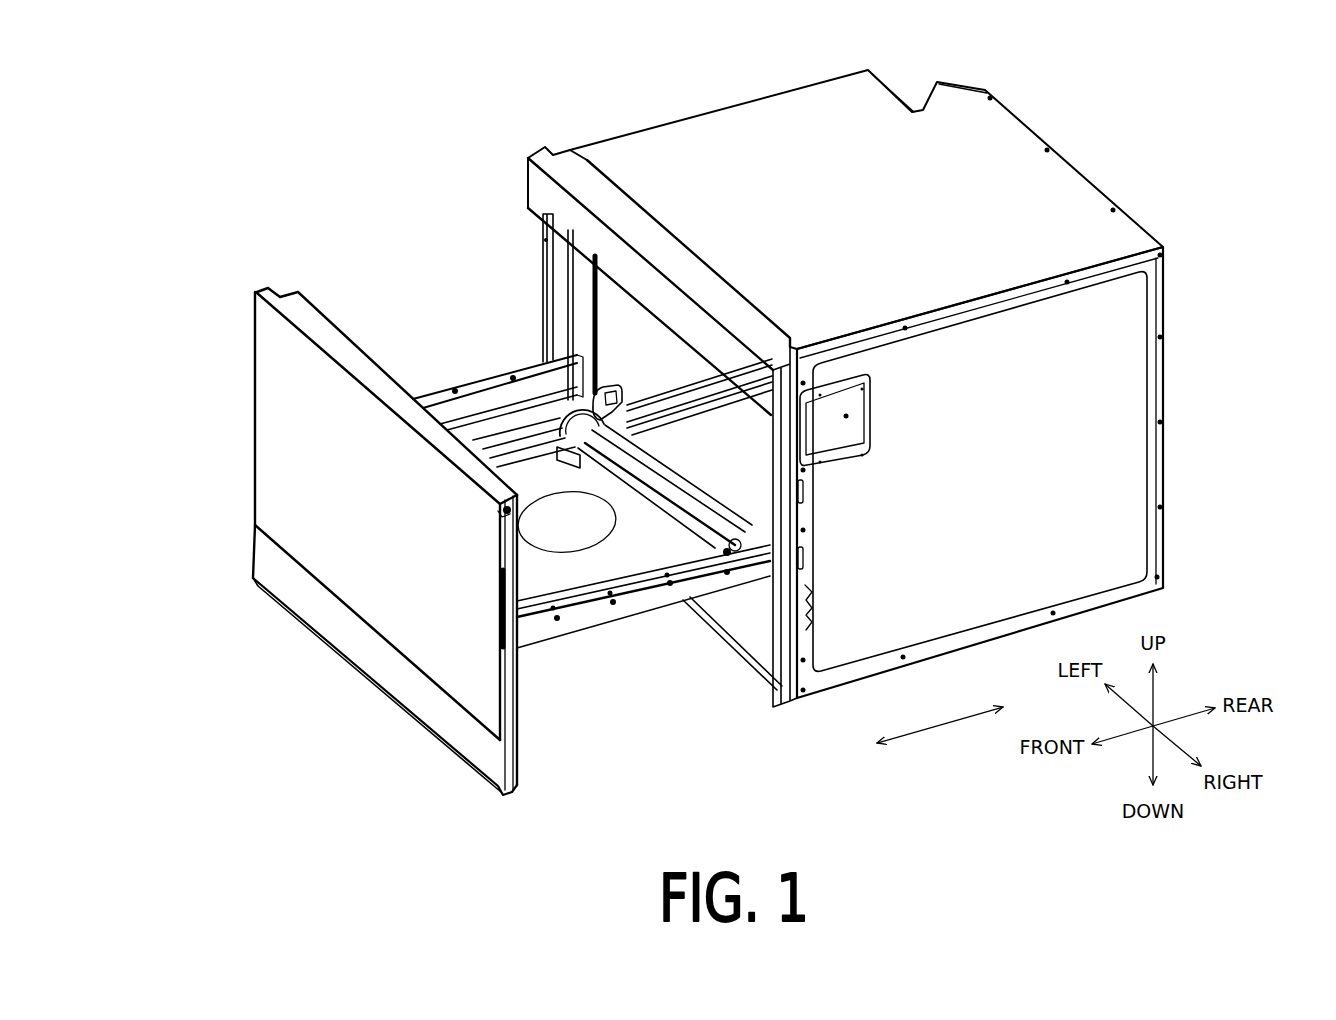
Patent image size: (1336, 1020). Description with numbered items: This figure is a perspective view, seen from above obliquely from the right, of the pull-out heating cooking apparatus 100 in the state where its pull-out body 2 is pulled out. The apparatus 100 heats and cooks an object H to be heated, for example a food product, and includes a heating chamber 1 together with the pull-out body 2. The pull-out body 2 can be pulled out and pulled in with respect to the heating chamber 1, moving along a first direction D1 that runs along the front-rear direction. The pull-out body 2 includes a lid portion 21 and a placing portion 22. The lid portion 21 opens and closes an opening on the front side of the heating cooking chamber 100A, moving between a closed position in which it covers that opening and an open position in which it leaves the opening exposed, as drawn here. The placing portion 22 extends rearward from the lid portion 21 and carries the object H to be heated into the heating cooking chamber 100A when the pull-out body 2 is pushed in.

The pull-out heating cooking apparatus 100 is at (303, 139).
The heating chamber 1 is at (780, 93).
The heating cooking chamber 100A is at (616, 296).
The pull-out body 2 is at (312, 297).
The lid portion 21 is at (270, 436).
The placing portion 22 is at (573, 584).
The object to be heated H is at (604, 549).
The first direction D1 is at (935, 728).